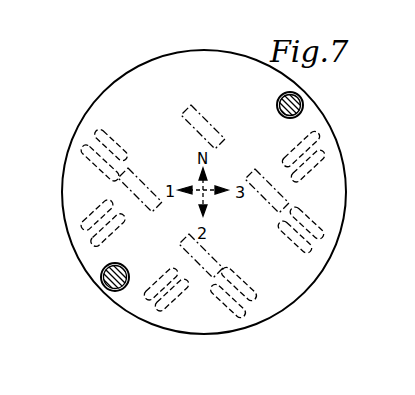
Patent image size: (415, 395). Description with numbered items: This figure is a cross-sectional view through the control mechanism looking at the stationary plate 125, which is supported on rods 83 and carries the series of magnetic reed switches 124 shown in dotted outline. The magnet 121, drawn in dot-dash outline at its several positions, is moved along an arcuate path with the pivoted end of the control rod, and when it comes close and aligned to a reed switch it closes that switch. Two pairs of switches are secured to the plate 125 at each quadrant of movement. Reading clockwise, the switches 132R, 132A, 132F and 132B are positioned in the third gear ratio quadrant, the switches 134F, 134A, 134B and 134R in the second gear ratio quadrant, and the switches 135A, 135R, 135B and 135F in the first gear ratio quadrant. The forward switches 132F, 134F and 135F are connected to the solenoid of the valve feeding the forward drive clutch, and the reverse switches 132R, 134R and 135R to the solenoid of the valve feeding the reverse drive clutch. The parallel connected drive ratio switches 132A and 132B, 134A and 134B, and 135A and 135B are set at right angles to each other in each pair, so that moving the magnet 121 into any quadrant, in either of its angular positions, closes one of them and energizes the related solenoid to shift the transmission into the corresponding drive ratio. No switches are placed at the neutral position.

The stationary plate 125 is at (122, 80).
The magnetic reed switches 124 is at (70, 168).
The magnet 121 is at (140, 178).
The rods 83 is at (304, 100).
The forward drive switch 135F is at (95, 132).
The drive ratio switch 135B is at (82, 150).
The reverse drive switch 135R is at (85, 222).
The drive ratio switch 135A is at (96, 240).
The reverse drive switch 132R is at (322, 130).
The drive ratio switch 132A is at (326, 153).
The forward drive switch 132F is at (327, 227).
The drive ratio switch 132B is at (318, 252).
The reverse drive switch 134R is at (146, 296).
The drive ratio switch 134B is at (167, 303).
The forward drive switch 134F is at (258, 315).
The drive ratio switch 134A is at (240, 324).